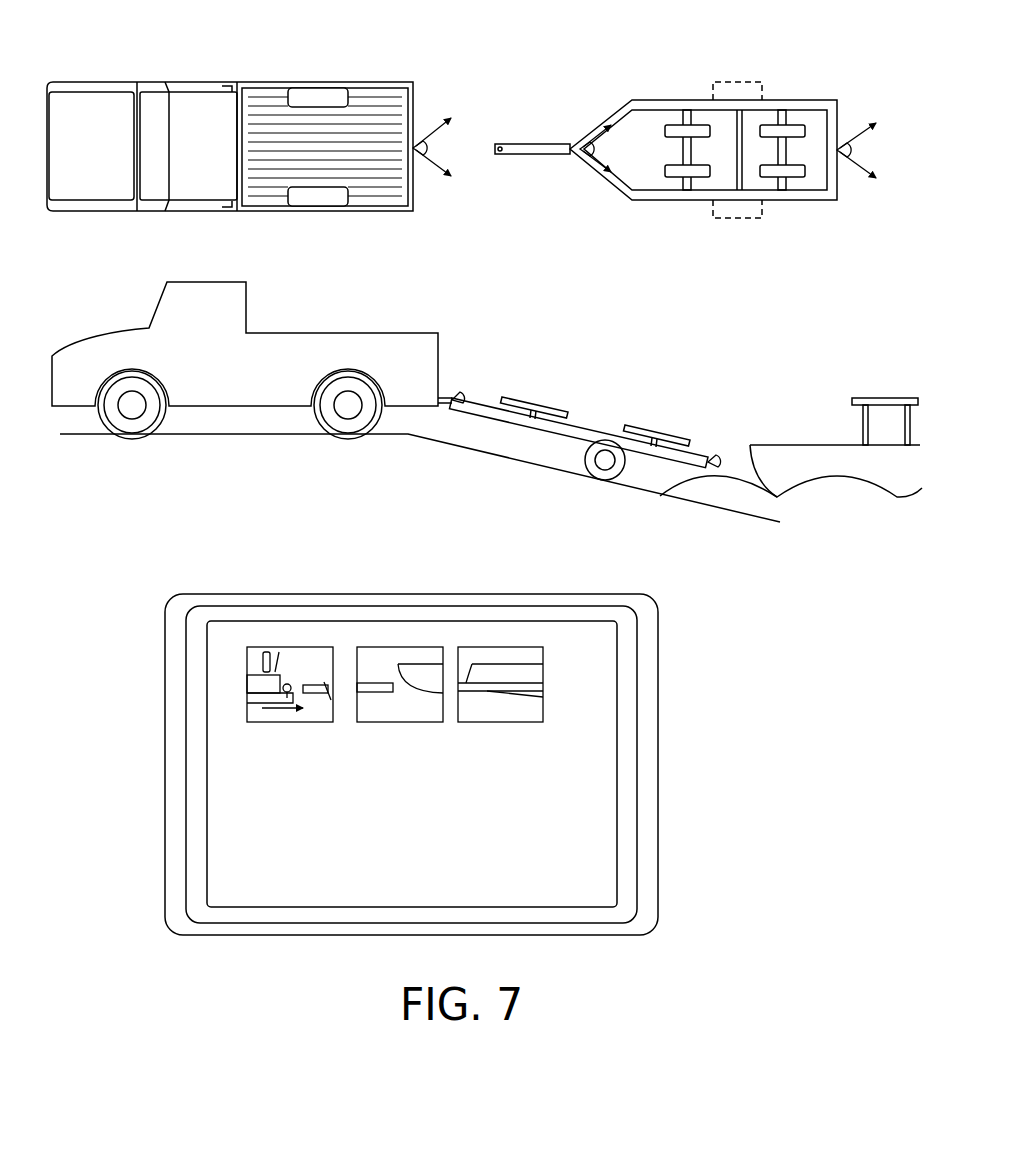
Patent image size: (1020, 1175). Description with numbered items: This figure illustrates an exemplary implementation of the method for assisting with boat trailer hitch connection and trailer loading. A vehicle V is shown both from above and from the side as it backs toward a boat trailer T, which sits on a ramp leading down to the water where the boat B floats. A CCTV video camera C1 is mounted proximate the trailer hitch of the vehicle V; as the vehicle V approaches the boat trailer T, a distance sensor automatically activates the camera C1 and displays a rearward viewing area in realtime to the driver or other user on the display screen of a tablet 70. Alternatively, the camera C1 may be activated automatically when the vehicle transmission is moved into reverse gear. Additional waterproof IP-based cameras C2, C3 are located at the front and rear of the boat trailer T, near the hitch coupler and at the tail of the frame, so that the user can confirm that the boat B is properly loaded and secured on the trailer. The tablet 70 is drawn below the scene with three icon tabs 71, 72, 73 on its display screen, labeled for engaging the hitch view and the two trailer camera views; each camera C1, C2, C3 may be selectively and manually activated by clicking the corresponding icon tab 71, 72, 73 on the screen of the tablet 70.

The vehicle V is at (243, 73).
The boat trailer T is at (668, 88).
The boat B is at (790, 425).
The CCTV video camera C1 is at (432, 149).
The waterproof IP-based camera C2 is at (534, 264).
The waterproof IP-based camera C3 is at (792, 295).
The tablet 70 is at (165, 660).
The icon tab 71 is at (247, 712).
The icon tab 72 is at (549, 707).
The icon tab 73 is at (444, 719).